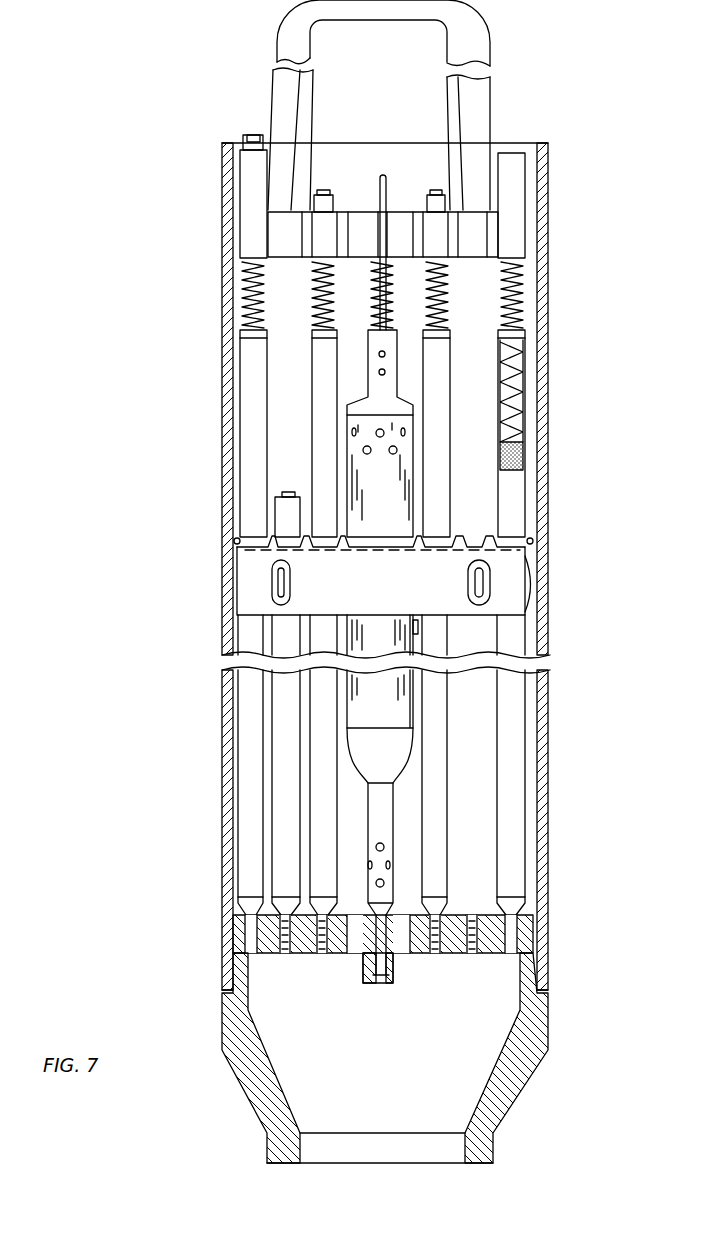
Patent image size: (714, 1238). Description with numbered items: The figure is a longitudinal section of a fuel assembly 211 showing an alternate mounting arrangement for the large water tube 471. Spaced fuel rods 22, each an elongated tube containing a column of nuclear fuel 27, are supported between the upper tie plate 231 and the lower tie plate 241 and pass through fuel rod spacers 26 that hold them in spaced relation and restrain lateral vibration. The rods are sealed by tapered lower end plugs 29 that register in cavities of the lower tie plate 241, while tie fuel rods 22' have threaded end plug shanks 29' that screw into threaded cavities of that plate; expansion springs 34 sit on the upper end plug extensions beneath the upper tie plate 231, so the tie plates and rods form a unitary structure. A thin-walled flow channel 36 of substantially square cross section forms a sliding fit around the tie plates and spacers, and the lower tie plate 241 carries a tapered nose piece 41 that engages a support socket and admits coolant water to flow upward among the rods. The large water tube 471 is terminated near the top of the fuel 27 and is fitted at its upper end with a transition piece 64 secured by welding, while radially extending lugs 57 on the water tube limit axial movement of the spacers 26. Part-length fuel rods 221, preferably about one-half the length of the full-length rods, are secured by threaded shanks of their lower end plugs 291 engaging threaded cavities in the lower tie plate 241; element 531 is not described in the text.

The fuel assembly 211 is at (566, 359).
The upper tie plate 231 is at (523, 203).
The expansion springs 34 is at (520, 290).
The nuclear fuel 27 is at (520, 455).
The flow channel 36 is at (547, 520).
The fuel rod spacers 26 is at (535, 612).
The fuel rods 22 is at (208, 433).
The tie fuel rods 22' is at (292, 483).
The transition piece 64 is at (368, 405).
The lugs 57 is at (418, 628).
The large water tube 471 is at (410, 700).
The neck 531 is at (398, 742).
The part-length fuel rods 221 is at (270, 740).
The lower end plugs 29 is at (206, 902).
The lower tie plate 241 is at (540, 915).
The threaded end plug shanks 29' is at (336, 964).
The lower end plugs 291 is at (286, 955).
The nose piece 41 is at (548, 1076).